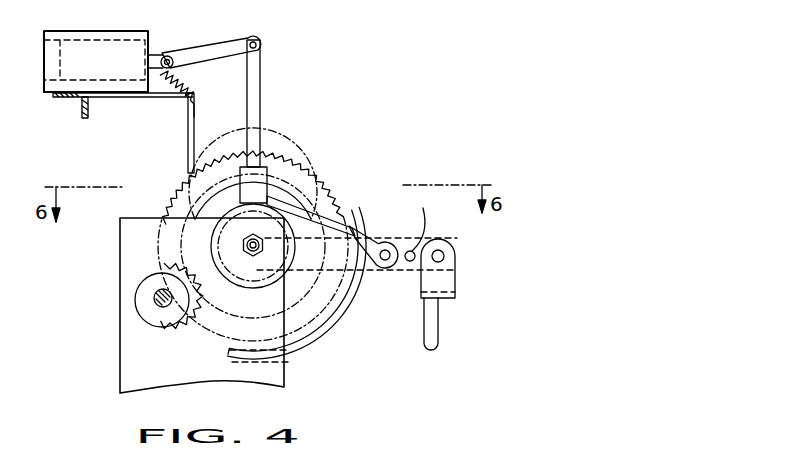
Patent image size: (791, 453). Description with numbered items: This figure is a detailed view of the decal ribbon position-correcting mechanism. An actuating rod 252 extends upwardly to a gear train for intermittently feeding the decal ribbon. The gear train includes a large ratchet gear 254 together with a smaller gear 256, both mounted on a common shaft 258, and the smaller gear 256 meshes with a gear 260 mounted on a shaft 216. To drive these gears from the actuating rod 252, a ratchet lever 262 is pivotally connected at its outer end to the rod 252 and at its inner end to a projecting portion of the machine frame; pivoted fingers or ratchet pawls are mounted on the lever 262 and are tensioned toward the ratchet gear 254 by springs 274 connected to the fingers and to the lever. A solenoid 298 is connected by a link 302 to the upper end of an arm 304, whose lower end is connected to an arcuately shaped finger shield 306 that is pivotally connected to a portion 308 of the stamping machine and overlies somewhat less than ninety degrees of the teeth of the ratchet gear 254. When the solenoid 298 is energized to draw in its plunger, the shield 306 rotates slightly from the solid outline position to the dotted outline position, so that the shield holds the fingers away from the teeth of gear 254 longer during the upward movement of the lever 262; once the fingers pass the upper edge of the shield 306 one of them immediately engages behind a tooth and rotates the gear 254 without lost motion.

The solenoid 298 is at (110, 37).
The link 302 is at (213, 53).
The arm 304 is at (258, 132).
The large ratchet gear 254 is at (178, 192).
The smaller gear 256 is at (185, 257).
The common shaft 258 is at (256, 268).
The gear 260 is at (133, 302).
The shaft 216 is at (155, 303).
The finger shield 306 is at (322, 342).
The portion of the stamping machine 308 is at (198, 368).
The springs 274 is at (378, 216).
The ratchet lever 262 is at (408, 266).
The actuating rod 252 is at (435, 333).